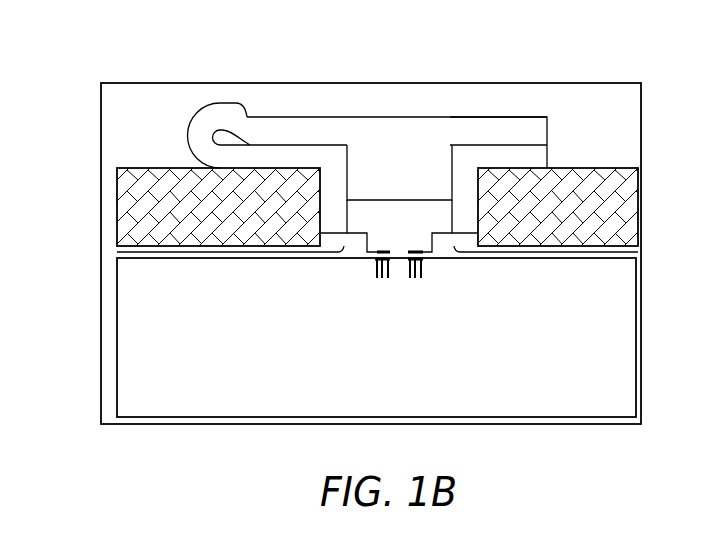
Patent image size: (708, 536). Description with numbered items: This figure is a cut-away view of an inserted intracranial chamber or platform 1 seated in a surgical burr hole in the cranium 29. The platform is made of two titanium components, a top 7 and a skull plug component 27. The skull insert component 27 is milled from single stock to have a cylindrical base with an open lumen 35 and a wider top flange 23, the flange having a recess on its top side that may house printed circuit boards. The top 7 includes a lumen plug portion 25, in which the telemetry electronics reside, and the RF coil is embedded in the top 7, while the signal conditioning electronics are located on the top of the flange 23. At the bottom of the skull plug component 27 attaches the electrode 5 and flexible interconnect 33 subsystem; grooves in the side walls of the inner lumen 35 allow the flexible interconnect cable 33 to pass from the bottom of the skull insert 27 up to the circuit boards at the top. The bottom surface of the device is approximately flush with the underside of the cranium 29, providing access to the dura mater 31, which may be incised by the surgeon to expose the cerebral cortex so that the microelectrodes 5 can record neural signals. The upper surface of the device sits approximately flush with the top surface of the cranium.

The intracranial chamber 1 is at (280, 117).
The electrode 5 is at (415, 280).
The top 7 is at (525, 123).
The top flange 23 is at (535, 157).
The lumen plug portion 25 is at (398, 150).
The skull plug component 27 is at (461, 207).
The cranium 29 is at (140, 210).
The dura mater 31 is at (133, 346).
The flexible interconnect cable 33 is at (365, 245).
The inner lumen 35 is at (399, 220).